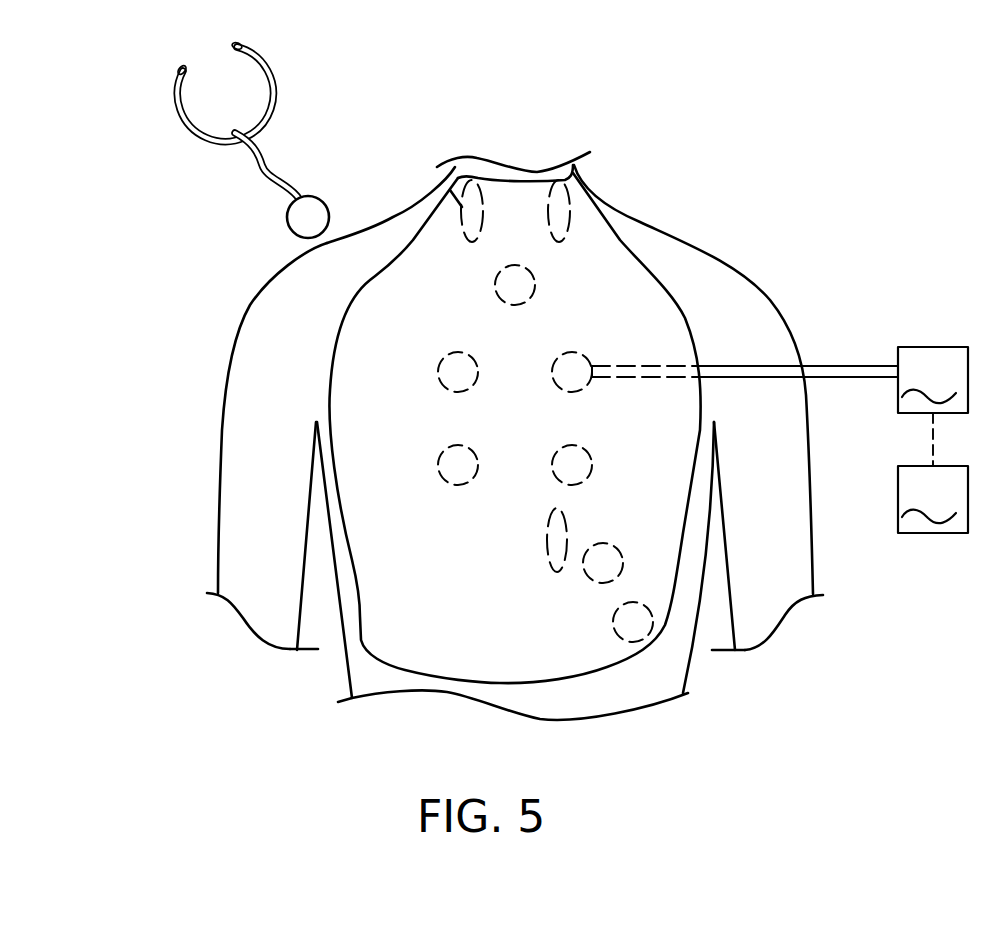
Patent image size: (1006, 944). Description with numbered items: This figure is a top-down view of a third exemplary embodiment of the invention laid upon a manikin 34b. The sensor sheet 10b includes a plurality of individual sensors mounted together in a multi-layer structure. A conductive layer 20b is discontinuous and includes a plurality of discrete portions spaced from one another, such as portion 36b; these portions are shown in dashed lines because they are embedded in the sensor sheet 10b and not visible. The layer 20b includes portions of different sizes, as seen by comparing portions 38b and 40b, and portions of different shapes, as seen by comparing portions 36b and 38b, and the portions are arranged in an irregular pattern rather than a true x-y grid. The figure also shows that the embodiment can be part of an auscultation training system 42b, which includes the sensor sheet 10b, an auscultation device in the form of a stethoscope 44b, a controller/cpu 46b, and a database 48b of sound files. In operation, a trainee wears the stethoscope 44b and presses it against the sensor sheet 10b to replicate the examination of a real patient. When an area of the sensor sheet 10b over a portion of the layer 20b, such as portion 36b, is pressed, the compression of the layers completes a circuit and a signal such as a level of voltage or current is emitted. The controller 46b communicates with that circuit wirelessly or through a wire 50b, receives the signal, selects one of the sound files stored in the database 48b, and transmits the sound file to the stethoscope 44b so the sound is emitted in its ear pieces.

The sensor sheet 10b is at (367, 660).
The conductive layer 20b is at (679, 224).
The manikin 34b is at (718, 270).
The portion 36b is at (575, 350).
The portion 38b is at (443, 192).
The portion 40b is at (545, 542).
The auscultation training system 42b is at (165, 572).
The stethoscope 44b is at (210, 178).
The controller/cpu 46b is at (933, 380).
The database 48b is at (933, 473).
The wire 50b is at (820, 372).